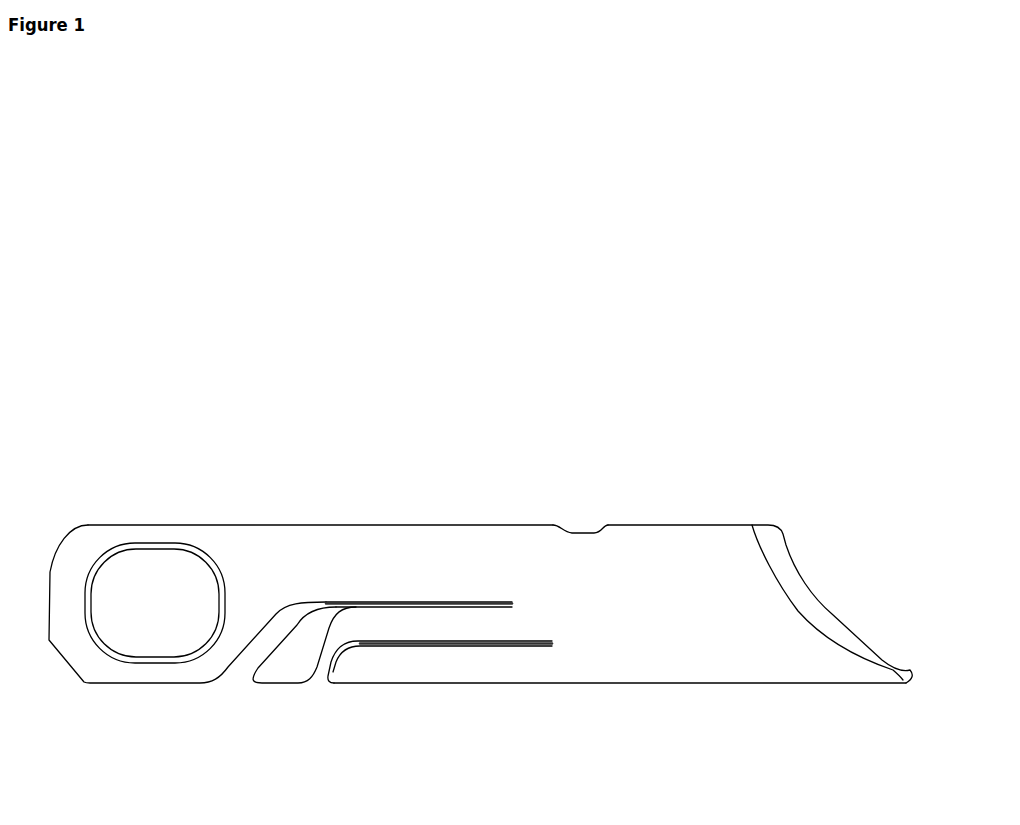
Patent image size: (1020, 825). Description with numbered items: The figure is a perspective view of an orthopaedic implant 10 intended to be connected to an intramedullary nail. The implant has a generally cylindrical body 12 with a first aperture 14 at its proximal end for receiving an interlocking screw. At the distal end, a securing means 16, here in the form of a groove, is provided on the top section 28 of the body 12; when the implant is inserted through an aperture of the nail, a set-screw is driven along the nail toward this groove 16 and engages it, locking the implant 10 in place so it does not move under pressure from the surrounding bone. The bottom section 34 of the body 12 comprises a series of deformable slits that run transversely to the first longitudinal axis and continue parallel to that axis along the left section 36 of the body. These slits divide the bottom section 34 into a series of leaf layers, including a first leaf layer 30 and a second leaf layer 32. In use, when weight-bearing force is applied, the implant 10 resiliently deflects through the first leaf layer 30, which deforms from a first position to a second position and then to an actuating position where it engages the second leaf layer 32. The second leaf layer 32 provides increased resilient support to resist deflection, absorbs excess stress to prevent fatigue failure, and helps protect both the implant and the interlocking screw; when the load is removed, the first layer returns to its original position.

The orthopaedic implant 10 is at (408, 362).
The body 12 is at (226, 521).
The first aperture 14 is at (154, 578).
The securing means (groove) 16 is at (582, 531).
The top section 28 is at (462, 521).
The first leaf layer 30 is at (286, 673).
The second leaf layer 32 is at (352, 673).
The bottom section 34 is at (503, 688).
The left section 36 is at (663, 607).